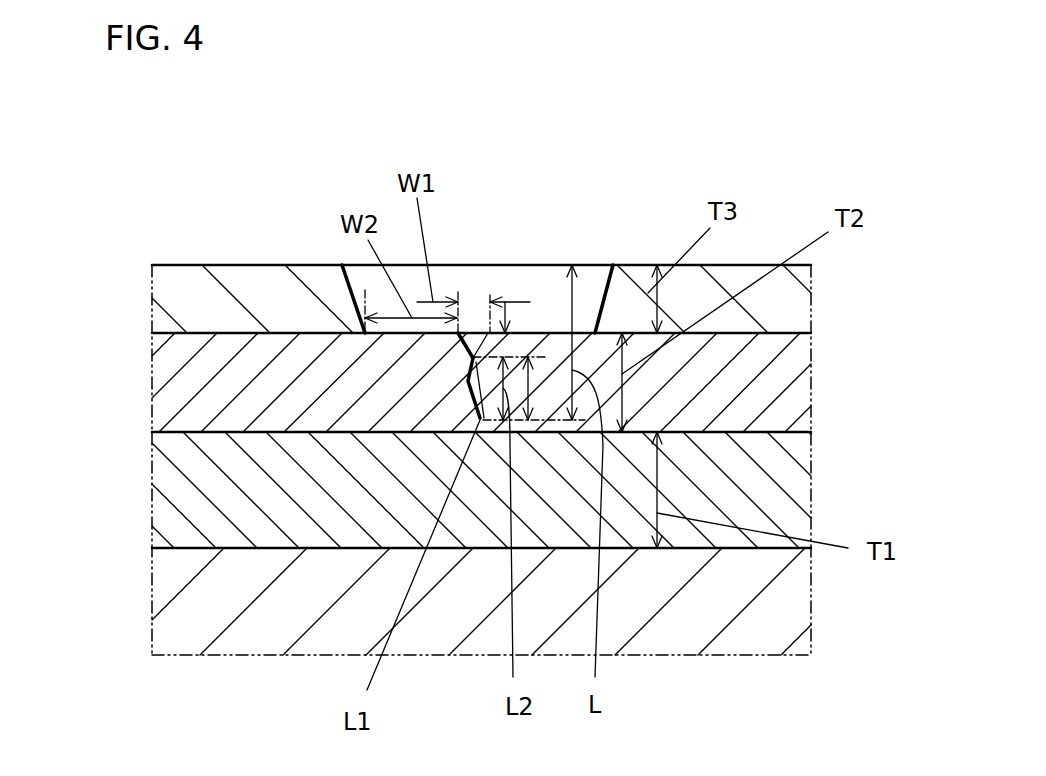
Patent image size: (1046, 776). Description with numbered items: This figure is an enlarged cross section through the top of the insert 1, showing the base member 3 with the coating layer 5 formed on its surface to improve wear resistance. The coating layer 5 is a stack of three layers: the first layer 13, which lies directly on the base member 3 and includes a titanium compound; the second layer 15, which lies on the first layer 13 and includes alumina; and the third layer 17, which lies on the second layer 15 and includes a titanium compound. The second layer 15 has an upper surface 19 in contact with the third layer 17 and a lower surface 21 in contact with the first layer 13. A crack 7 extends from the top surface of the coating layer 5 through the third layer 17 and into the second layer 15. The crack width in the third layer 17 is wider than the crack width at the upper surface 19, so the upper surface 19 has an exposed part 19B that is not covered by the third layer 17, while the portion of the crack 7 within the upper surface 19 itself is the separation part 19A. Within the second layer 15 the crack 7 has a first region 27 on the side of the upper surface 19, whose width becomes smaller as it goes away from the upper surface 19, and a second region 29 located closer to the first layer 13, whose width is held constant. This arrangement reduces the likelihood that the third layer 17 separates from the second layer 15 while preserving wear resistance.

The insert 1 is at (293, 205).
The base member 3 is at (700, 613).
The coating layer 5 is at (883, 263).
The crack 7 is at (600, 283).
The first layer 13 is at (768, 470).
The second layer 15 is at (768, 388).
The third layer 17 is at (768, 310).
The upper surface 19 is at (237, 333).
The separation part 19A is at (475, 333).
The exposed part 19B is at (435, 333).
The lower surface 21 is at (257, 433).
The first region 27 is at (465, 345).
The second region 29 is at (470, 398).